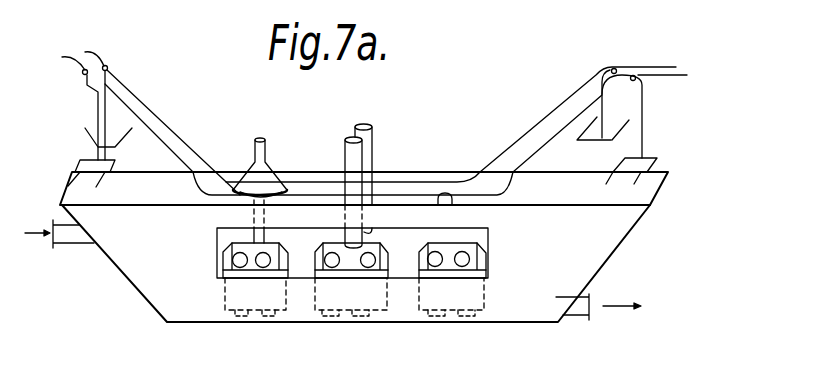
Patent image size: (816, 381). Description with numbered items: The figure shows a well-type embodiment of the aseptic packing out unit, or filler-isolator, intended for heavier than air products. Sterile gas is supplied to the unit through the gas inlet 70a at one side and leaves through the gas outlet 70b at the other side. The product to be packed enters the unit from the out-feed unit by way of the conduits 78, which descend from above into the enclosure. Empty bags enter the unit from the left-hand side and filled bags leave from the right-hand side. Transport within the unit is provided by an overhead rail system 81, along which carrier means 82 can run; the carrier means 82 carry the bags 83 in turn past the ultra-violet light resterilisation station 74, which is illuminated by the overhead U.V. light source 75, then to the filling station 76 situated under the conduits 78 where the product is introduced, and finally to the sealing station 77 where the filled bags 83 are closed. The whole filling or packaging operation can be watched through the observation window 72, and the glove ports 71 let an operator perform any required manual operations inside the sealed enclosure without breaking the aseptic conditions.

The gas inlet 70a is at (37, 240).
The gas outlet 70b is at (592, 310).
The glove ports 71 is at (233, 260).
The observation window 72 is at (405, 258).
The ultra-violet light resterilisation station 74 is at (265, 290).
The overhead U.V. light source 75 is at (264, 138).
The filling station 76 is at (390, 270).
The sealing station 77 is at (450, 285).
The conduits 78 is at (365, 125).
The overhead rail system 81 is at (208, 88).
The carrier means 82 is at (78, 160).
The bags 83 is at (215, 300).